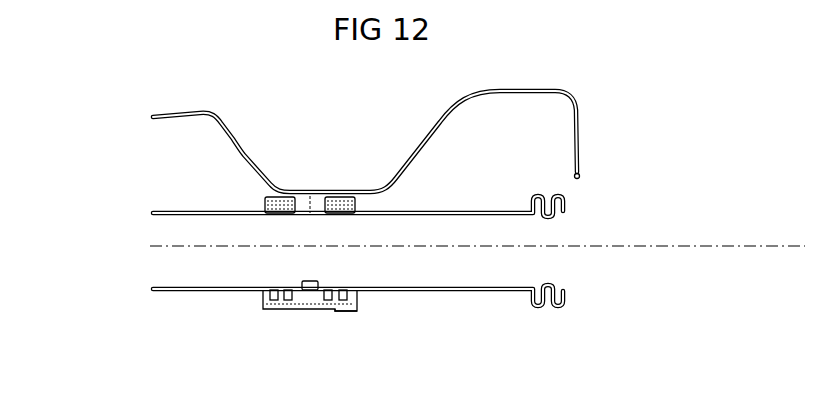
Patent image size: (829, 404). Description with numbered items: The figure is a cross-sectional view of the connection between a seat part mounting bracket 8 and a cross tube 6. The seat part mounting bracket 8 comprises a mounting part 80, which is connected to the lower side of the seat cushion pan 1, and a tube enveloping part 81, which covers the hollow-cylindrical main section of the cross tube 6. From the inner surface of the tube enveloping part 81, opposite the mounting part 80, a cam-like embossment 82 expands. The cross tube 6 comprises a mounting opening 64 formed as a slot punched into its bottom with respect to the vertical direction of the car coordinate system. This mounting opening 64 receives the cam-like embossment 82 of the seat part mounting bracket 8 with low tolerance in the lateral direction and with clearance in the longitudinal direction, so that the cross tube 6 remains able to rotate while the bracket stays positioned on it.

The seat cushion pan 1 is at (578, 120).
The cross tube 6 is at (498, 215).
The seat part mounting bracket 8 is at (258, 196).
The mounting part 80 is at (343, 198).
The tube enveloping part 81 is at (343, 310).
The cam-like embossment 82 is at (313, 295).
The mounting opening 64 is at (318, 283).